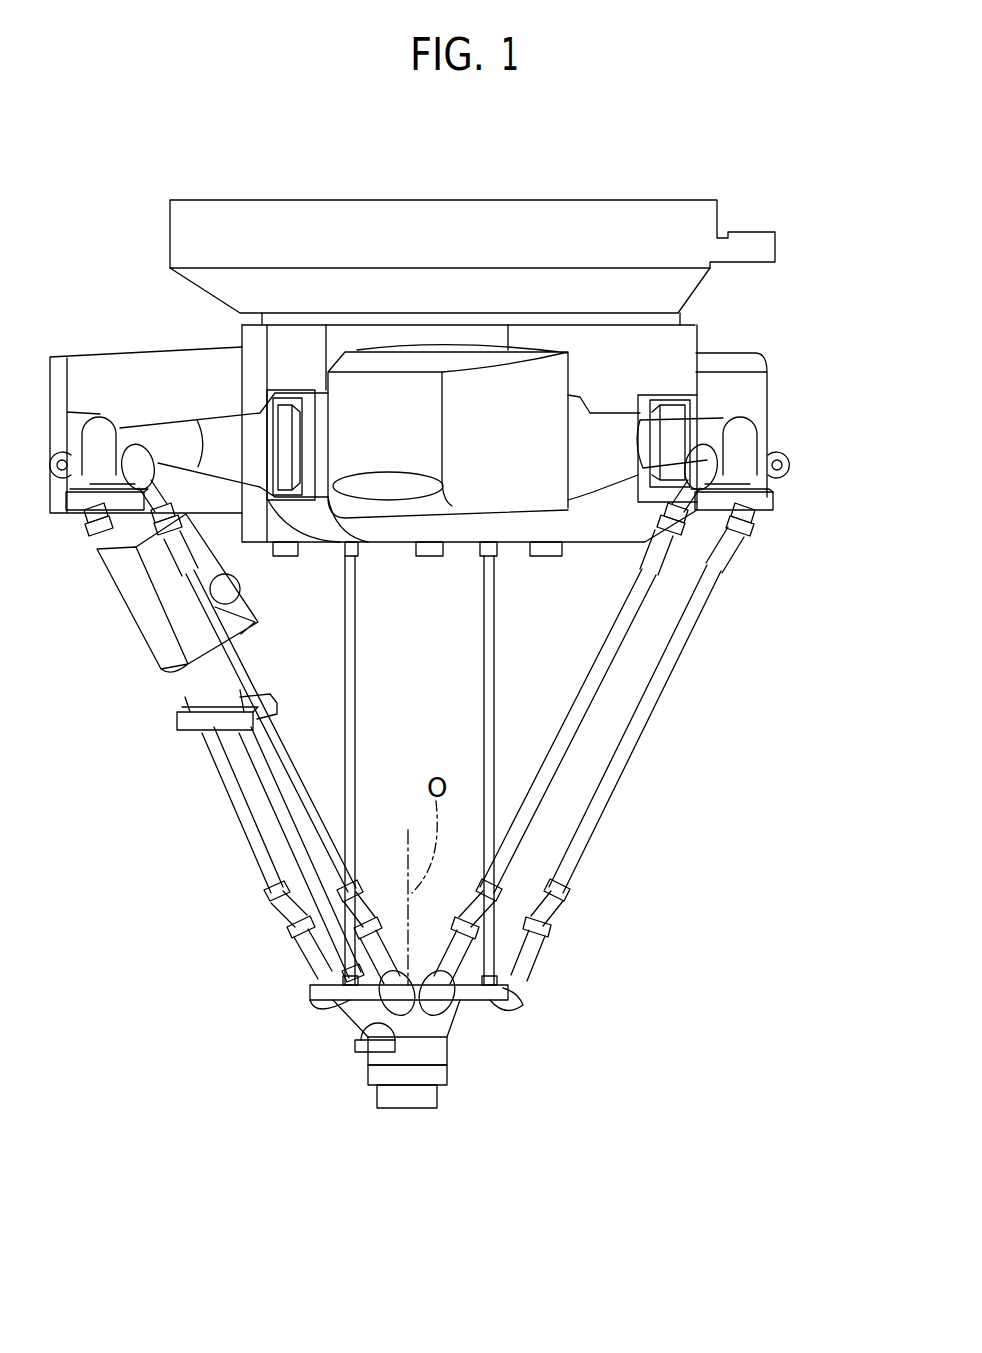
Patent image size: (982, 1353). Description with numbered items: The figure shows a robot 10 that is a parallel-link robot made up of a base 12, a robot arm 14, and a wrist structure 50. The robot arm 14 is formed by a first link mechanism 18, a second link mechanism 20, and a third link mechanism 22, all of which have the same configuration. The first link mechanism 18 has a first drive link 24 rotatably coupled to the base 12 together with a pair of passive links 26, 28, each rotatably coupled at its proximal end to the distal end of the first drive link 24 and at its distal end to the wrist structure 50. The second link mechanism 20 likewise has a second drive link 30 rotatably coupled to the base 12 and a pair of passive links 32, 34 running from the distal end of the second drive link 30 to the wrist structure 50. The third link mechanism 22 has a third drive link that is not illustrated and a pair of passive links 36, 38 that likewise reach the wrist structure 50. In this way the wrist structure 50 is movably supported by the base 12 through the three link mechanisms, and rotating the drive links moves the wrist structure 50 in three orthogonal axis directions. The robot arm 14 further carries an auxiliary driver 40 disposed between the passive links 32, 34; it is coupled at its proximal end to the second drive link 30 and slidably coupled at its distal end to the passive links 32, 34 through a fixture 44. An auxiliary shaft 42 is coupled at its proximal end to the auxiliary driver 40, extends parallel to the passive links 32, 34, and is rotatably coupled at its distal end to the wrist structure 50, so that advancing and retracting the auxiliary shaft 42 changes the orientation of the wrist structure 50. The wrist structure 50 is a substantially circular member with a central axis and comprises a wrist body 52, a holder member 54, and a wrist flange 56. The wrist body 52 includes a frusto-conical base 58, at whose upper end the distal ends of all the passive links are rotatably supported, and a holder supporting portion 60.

The robot 10 is at (760, 134).
The base 12 is at (768, 395).
The robot arm 14 is at (646, 700).
The first link mechanism 18 is at (622, 729).
The second link mechanism 20 is at (223, 706).
The third link mechanism 22 is at (470, 763).
The first drive link 24 is at (673, 436).
The passive link 26 is at (638, 765).
The passive link 28 is at (568, 717).
The second drive link 30 is at (182, 437).
The passive link 32 is at (252, 848).
The passive link 34 is at (293, 758).
The passive link 36 is at (357, 642).
The passive link 38 is at (483, 697).
The auxiliary driver 40 is at (145, 608).
The auxiliary shaft 42 is at (280, 907).
The fixture 44 is at (177, 725).
The wrist structure 50 is at (413, 1087).
The wrist body 52 is at (475, 1015).
The holder member 54 is at (455, 1076).
The wrist flange 56 is at (343, 1077).
The base 58 is at (443, 1023).
The holder supporting portion 60 is at (437, 1057).